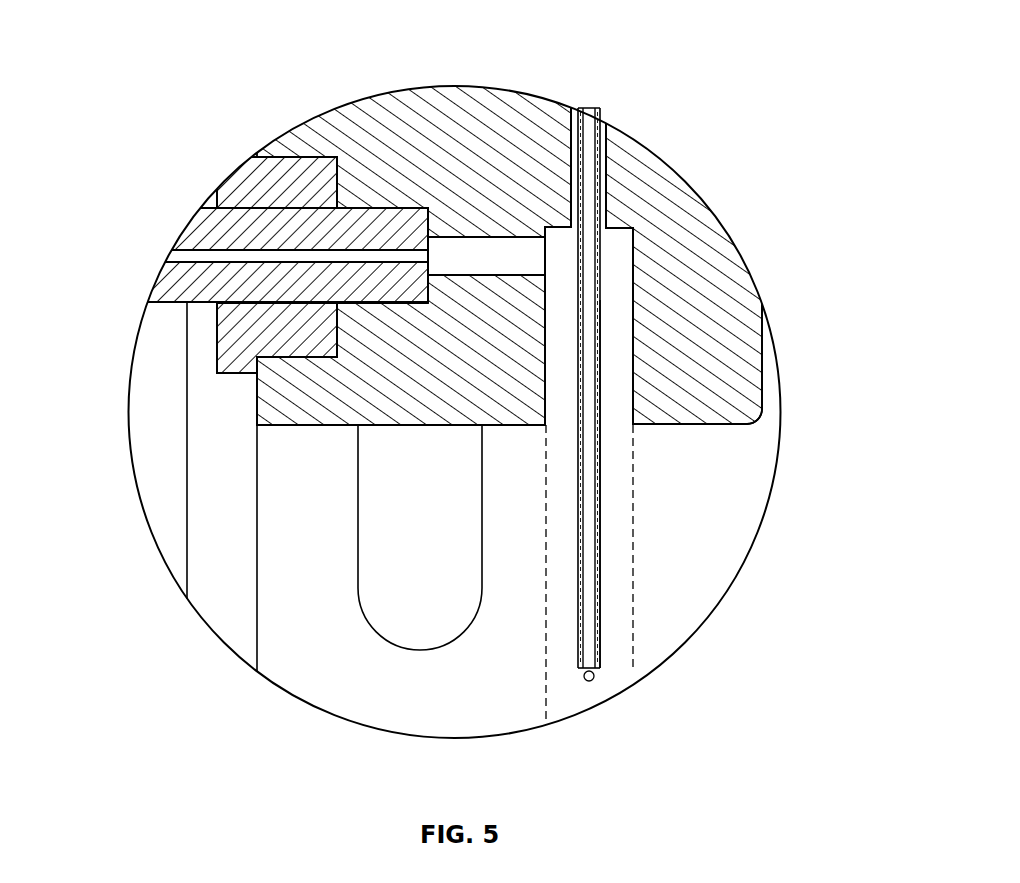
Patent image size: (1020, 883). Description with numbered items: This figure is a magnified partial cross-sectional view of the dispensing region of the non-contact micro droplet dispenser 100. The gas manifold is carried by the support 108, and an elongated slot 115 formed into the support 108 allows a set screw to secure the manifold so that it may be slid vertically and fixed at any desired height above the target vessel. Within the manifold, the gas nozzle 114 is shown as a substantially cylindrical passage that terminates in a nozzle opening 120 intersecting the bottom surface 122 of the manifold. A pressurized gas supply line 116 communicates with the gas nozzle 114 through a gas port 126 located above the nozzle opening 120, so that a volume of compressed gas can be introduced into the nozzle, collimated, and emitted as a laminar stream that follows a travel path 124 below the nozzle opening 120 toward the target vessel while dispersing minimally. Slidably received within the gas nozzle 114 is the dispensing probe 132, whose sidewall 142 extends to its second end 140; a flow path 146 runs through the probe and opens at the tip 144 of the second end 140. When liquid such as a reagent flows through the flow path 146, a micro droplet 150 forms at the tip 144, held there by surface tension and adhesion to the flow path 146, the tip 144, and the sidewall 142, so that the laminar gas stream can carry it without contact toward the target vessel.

The non-contact micro droplet dispenser 100 is at (184, 46).
The support 108 is at (186, 405).
The gas nozzle 114 is at (622, 283).
The elongated slot 115 is at (358, 566).
The pressurized gas supply line 116 is at (223, 228).
The nozzle opening 120 is at (627, 427).
The bottom surface 122 is at (676, 425).
The travel path 124 is at (633, 562).
The gas port 126 is at (552, 250).
The dispensing probe 132 is at (600, 603).
The second end 140 is at (600, 633).
The sidewall 142 is at (600, 552).
The tip 144 is at (601, 666).
The flow path 146 is at (580, 587).
The micro droplet 150 is at (590, 682).